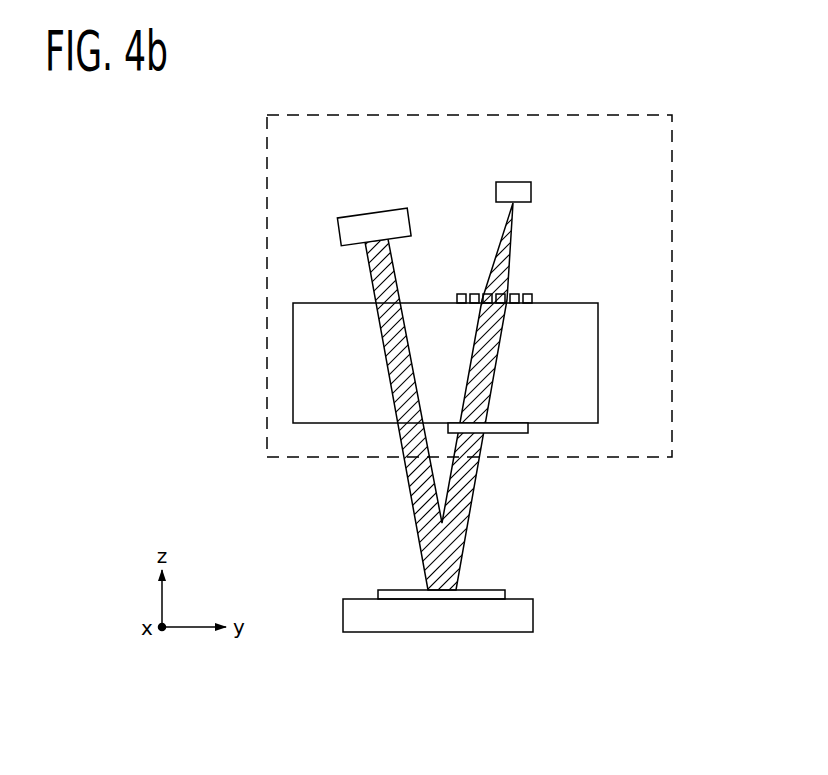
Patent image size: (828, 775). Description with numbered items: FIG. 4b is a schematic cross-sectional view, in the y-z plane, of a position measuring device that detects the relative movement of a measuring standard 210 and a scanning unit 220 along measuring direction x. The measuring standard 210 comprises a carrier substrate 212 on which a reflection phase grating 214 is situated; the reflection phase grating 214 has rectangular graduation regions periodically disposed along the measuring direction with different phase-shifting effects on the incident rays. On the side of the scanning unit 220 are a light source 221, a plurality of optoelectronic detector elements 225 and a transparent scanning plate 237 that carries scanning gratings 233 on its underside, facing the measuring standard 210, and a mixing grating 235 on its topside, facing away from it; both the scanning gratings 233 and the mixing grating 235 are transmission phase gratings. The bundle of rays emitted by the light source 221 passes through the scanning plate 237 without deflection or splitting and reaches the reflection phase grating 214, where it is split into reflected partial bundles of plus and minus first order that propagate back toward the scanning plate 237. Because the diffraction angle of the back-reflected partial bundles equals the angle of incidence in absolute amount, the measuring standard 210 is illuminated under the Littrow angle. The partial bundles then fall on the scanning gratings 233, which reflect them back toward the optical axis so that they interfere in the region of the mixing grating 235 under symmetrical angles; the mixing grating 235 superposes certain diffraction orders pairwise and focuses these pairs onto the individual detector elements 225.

The measuring standard 210 is at (438, 624).
The carrier substrate 212 is at (512, 615).
The reflection phase grating 214 is at (393, 588).
The scanning unit 220 is at (607, 95).
The light source 221 is at (372, 225).
The optoelectronic detector elements 225 is at (515, 190).
The scanning gratings 233 is at (510, 434).
The mixing grating 235 is at (528, 287).
The scanning plate 237 is at (582, 343).